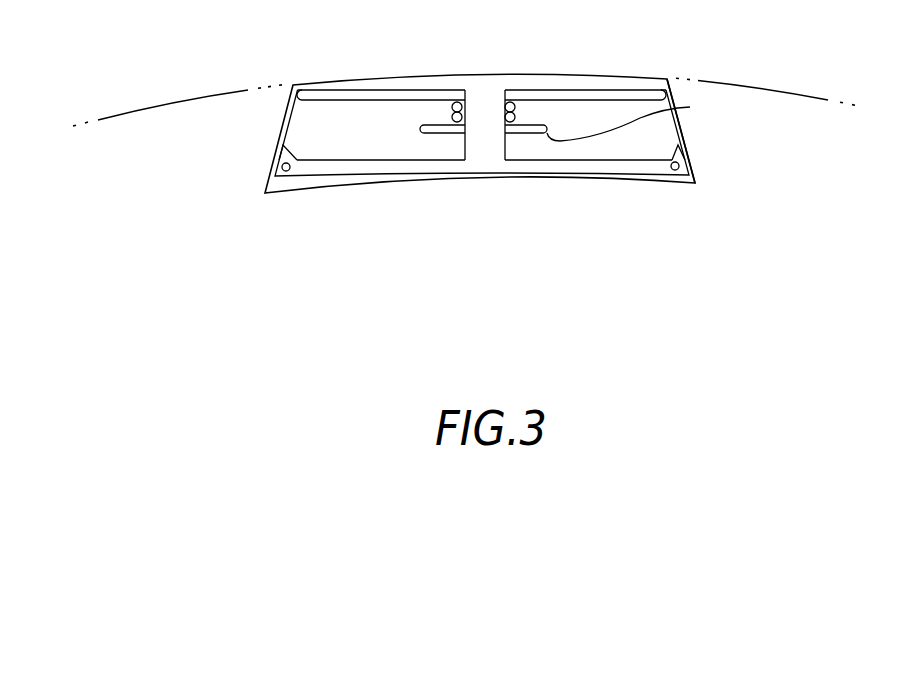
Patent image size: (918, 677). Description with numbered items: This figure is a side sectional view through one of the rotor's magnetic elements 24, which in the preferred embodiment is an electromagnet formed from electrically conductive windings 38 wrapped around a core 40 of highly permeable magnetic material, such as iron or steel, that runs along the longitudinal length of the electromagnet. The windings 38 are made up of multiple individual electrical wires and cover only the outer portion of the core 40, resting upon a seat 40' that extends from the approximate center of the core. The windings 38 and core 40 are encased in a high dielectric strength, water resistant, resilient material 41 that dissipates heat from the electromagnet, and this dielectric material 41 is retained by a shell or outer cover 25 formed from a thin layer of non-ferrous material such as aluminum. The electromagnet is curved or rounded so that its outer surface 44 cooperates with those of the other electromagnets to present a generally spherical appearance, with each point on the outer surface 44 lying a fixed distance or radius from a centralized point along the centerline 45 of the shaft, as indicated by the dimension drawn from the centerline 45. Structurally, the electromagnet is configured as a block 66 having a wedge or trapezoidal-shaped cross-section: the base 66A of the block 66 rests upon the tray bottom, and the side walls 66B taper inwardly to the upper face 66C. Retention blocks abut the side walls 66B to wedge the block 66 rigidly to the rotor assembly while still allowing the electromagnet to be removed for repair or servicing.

The block 66 is at (653, 78).
The base 66A is at (327, 188).
The side walls 66B is at (695, 163).
The upper face 66C is at (580, 75).
The resilient material 41 is at (332, 102).
The outer surface 44 is at (372, 83).
The core 40 is at (485, 173).
The seat 40' is at (640, 122).
The windings 38 is at (577, 112).
The magnetic element 24 is at (599, 190).
The outer cover 25 is at (662, 183).
The centerline 45 is at (226, 105).